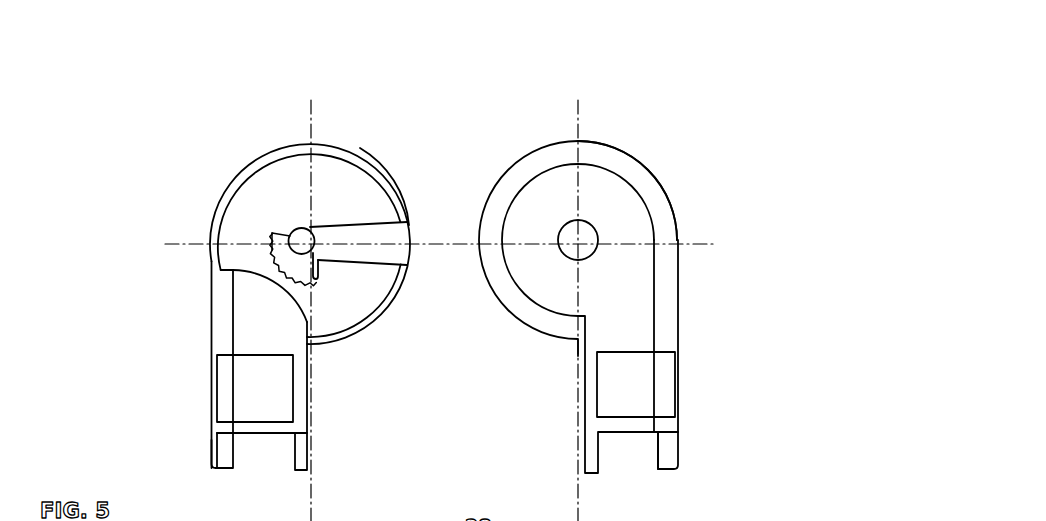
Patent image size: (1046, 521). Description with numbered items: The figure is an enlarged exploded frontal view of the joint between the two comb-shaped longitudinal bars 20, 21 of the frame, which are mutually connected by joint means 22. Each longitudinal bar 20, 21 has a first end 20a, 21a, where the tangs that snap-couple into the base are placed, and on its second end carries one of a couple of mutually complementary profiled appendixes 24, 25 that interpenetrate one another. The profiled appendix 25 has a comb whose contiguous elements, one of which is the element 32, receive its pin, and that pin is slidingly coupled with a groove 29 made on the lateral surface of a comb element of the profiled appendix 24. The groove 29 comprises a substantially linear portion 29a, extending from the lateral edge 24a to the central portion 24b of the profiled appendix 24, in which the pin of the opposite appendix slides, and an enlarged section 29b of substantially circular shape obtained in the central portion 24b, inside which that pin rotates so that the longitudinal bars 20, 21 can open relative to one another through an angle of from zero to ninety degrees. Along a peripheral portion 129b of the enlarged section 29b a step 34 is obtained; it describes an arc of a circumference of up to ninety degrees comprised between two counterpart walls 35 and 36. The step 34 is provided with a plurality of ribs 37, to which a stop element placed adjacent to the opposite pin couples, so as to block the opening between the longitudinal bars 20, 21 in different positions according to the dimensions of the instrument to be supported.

The longitudinal bar 20 is at (227, 452).
The first end of longitudinal bar 20a is at (191, 401).
The longitudinal bar 21 is at (667, 451).
The first end of longitudinal bar 21a is at (713, 394).
The joint means 22 is at (670, 124).
The profiled appendix 24 is at (260, 329).
The lateral edge 24a is at (419, 202).
The central portion 24b is at (299, 209).
The profiled appendix 25 is at (668, 328).
The groove 29 is at (395, 272).
The linear portion of groove 29a is at (370, 240).
The enlarged section of groove 29b is at (311, 242).
The comb element 32 is at (641, 180).
The step 34 is at (292, 262).
The counterpart wall 35 is at (273, 219).
The counterpart wall 36 is at (339, 278).
The ribs 37 is at (265, 275).
The peripheral portion of enlarged section 129b is at (310, 281).